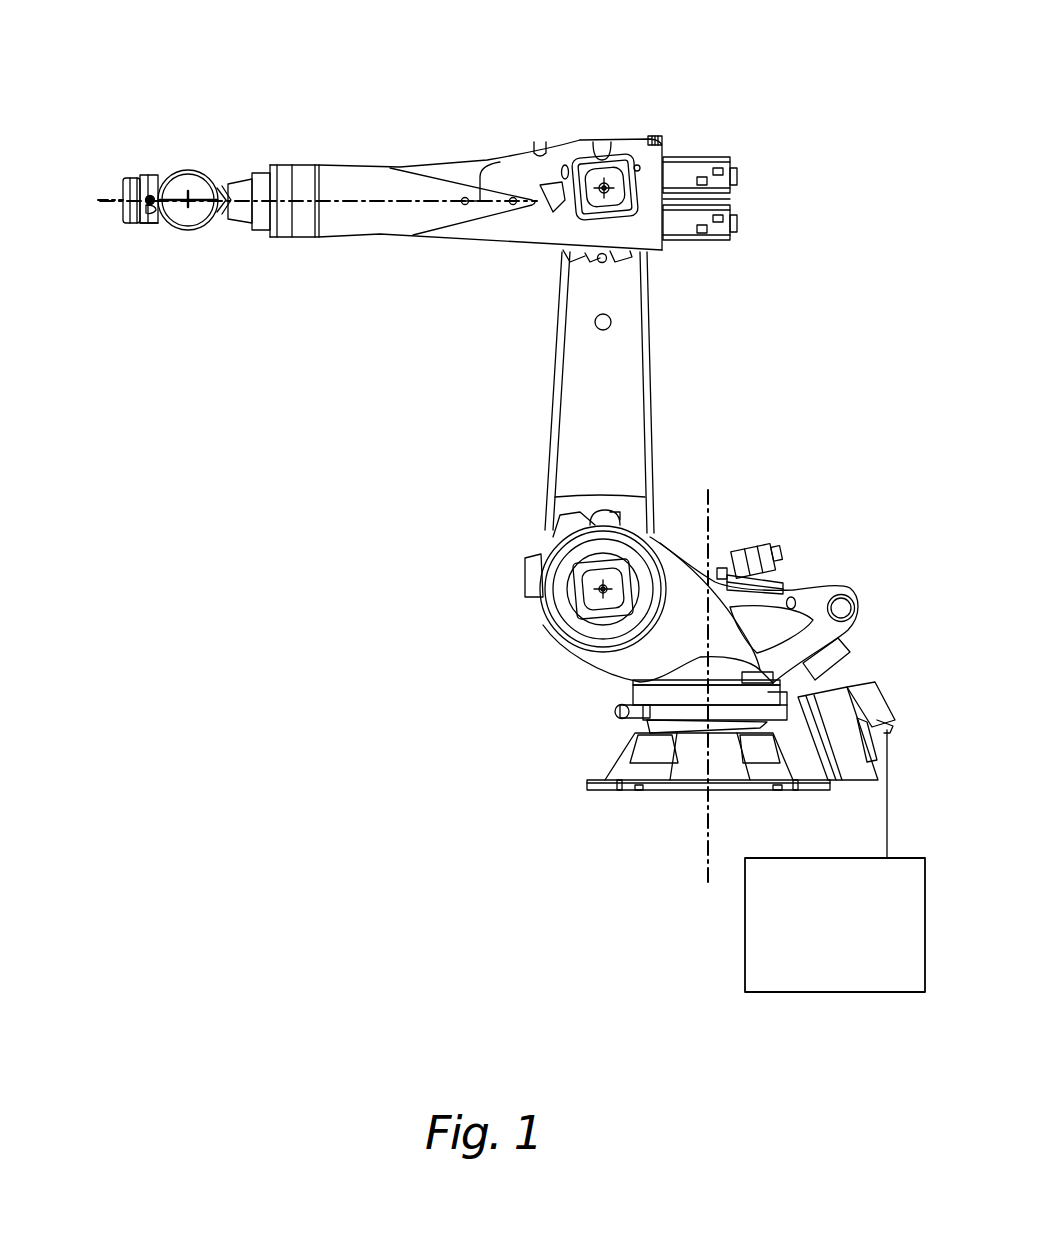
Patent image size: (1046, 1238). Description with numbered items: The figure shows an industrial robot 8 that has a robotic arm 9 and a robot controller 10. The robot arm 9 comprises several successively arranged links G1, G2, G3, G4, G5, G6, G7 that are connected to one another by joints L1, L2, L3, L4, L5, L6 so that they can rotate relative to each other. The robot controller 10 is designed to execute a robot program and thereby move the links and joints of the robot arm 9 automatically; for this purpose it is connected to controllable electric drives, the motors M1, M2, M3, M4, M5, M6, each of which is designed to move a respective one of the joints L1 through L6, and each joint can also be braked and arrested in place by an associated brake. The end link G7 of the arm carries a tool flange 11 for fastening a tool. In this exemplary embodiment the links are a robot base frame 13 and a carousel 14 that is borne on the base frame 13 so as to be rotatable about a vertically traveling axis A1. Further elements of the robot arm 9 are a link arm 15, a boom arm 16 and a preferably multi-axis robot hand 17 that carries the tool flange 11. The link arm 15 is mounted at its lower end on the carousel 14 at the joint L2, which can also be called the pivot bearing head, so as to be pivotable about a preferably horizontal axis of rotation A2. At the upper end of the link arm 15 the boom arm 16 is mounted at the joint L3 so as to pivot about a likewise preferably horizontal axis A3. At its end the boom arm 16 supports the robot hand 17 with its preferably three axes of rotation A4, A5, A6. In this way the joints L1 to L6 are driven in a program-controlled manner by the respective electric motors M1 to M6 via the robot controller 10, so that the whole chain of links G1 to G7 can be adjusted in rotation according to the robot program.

The industrial robot 8 is at (805, 163).
The robotic arm 9 is at (645, 403).
The robot controller 10 is at (770, 950).
The tool flange 11 is at (126, 184).
The robot base frame 13 is at (633, 772).
The carousel 14 is at (710, 623).
The link arm 15 is at (588, 420).
The boom arm 16 is at (350, 168).
The robot hand 17 is at (243, 190).
The link G1 is at (697, 777).
The link G2 is at (669, 578).
The link G3 is at (538, 392).
The link G4 is at (466, 164).
The link G5 is at (297, 131).
The link G6 is at (150, 175).
The end link G7 is at (121, 167).
The vertically traveling axis A1 is at (707, 835).
The axis of rotation A2 is at (606, 587).
The axis A3 is at (605, 189).
The axis of rotation A4 is at (533, 197).
The axis of rotation A5 is at (190, 198).
The axis of rotation A6 is at (111, 200).
The joint L1 is at (647, 688).
The joint L2 is at (545, 553).
The joint L3 is at (612, 226).
The joint L4 is at (268, 232).
The joint L5 is at (192, 203).
The joint L6 is at (128, 222).
The electric motor M1 is at (777, 587).
The electric motor M2 is at (598, 592).
The electric motor M3 is at (593, 189).
The electric motor M4 is at (728, 240).
The electric motor M5 is at (728, 158).
The electric motor M6 is at (700, 162).